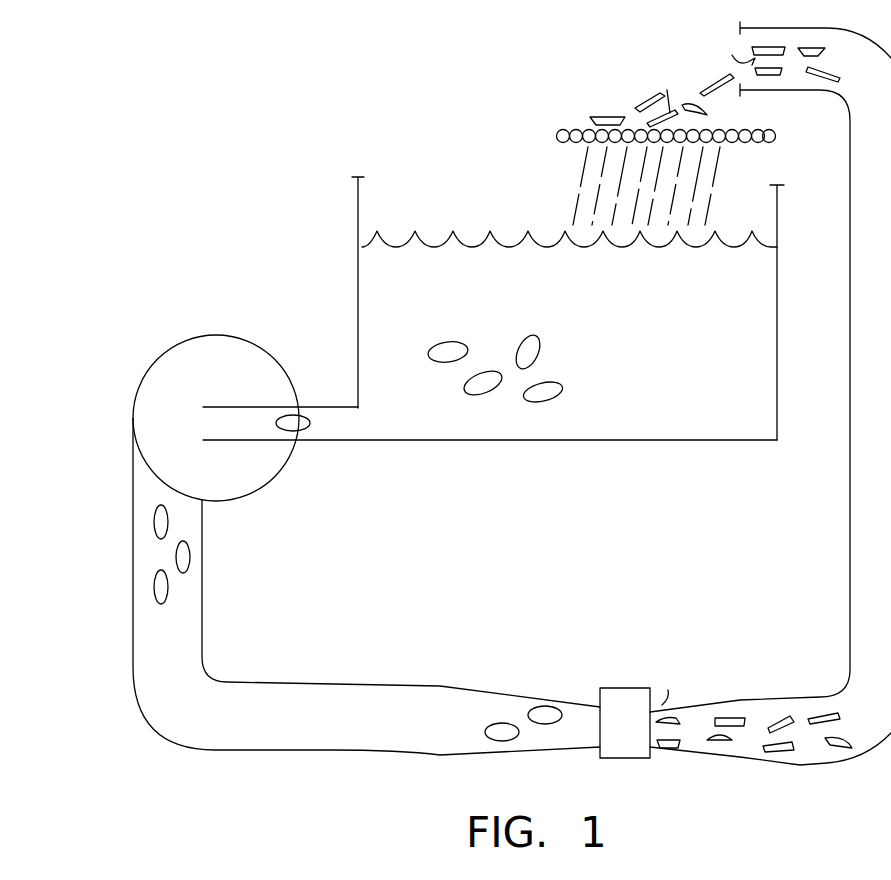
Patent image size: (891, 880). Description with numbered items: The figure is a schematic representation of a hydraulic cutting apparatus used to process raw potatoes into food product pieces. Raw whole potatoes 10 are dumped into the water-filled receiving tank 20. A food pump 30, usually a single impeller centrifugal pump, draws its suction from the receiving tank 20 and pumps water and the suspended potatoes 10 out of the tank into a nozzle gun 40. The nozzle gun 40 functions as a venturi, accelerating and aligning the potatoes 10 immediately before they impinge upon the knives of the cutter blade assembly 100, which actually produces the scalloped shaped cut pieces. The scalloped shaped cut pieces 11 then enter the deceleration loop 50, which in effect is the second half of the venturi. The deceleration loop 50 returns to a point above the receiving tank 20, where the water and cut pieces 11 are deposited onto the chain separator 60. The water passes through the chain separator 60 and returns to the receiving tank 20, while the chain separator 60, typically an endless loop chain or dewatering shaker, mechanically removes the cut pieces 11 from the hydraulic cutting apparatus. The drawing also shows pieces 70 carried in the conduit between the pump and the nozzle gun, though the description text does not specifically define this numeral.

The raw whole potatoes 10 is at (520, 342).
The scalloped shaped cut pieces 11 is at (680, 750).
The receiving tank 20 is at (374, 299).
The food pump 30 is at (152, 392).
The nozzle gun 40 is at (530, 752).
The deceleration loop 50 is at (845, 670).
The chain separator 60 is at (548, 135).
The objects in conduit 70 is at (530, 700).
The cutter blade assembly 100 is at (622, 688).